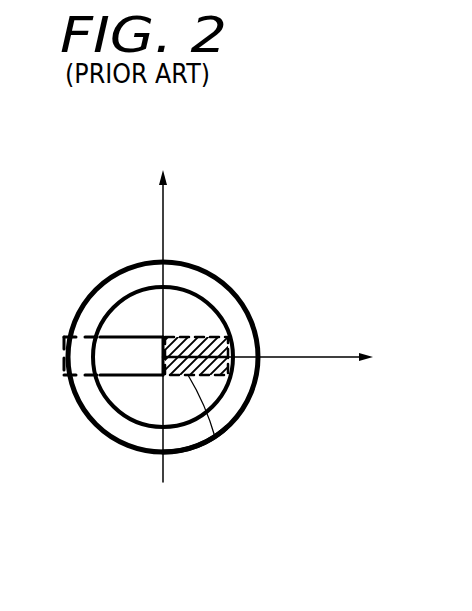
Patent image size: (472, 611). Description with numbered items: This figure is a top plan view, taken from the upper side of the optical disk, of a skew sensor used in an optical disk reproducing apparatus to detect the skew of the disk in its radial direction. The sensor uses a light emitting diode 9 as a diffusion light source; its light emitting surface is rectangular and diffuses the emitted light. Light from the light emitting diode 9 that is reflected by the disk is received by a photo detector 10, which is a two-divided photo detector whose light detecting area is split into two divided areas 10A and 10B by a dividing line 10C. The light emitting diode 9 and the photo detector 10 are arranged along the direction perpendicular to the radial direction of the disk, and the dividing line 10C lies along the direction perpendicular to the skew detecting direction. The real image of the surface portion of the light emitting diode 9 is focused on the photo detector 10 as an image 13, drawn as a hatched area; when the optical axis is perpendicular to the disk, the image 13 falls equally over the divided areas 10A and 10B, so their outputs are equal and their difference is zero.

The light emitting diode 9 is at (127, 375).
The photo detector 10 is at (333, 256).
The divided area 10A is at (214, 326).
The divided area 10B is at (205, 387).
The dividing line 10C is at (226, 428).
The image 13 is at (187, 337).